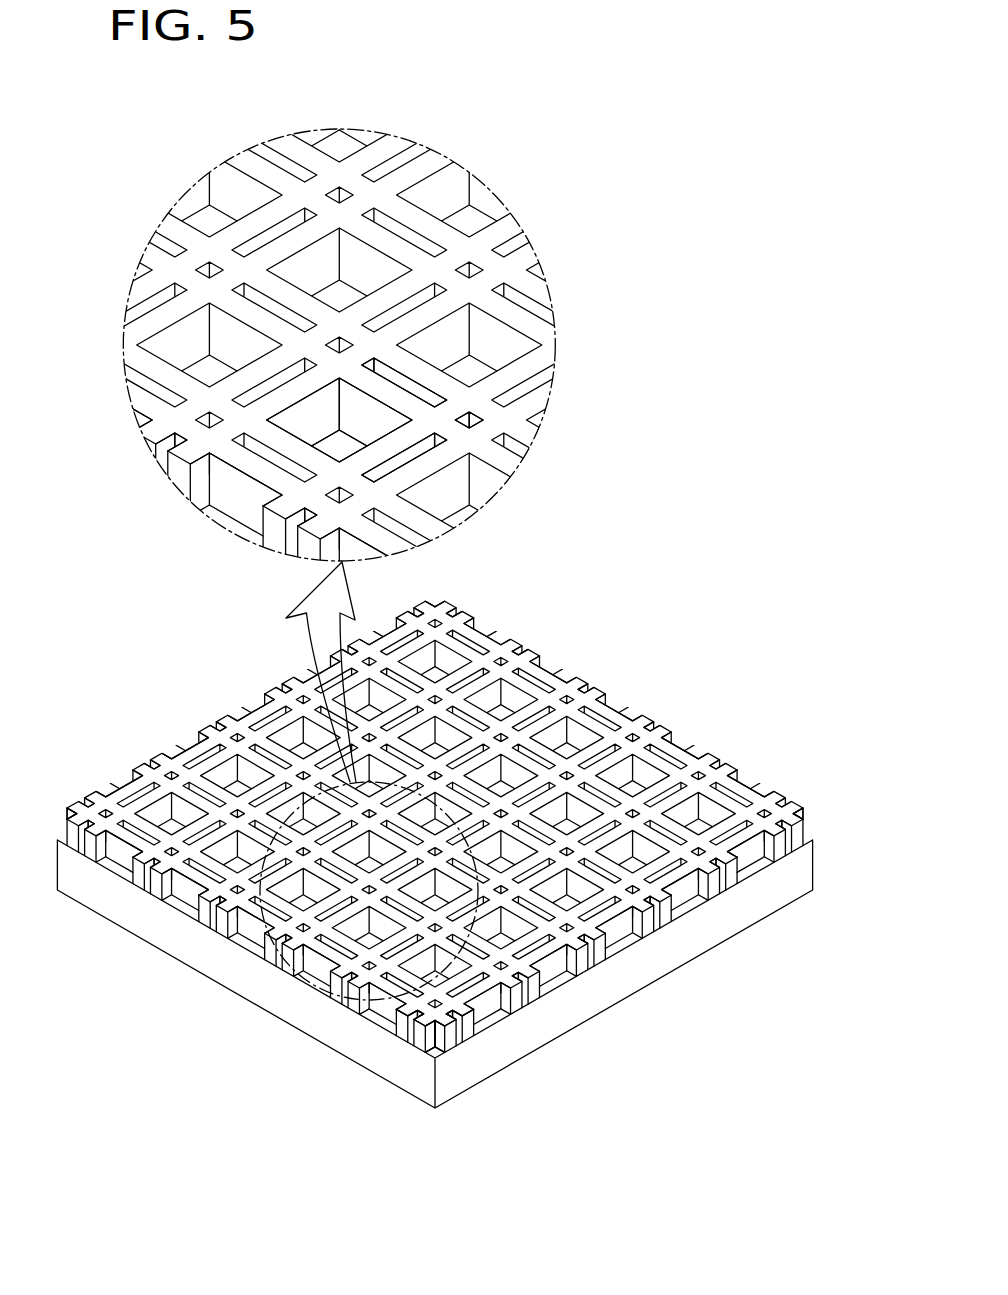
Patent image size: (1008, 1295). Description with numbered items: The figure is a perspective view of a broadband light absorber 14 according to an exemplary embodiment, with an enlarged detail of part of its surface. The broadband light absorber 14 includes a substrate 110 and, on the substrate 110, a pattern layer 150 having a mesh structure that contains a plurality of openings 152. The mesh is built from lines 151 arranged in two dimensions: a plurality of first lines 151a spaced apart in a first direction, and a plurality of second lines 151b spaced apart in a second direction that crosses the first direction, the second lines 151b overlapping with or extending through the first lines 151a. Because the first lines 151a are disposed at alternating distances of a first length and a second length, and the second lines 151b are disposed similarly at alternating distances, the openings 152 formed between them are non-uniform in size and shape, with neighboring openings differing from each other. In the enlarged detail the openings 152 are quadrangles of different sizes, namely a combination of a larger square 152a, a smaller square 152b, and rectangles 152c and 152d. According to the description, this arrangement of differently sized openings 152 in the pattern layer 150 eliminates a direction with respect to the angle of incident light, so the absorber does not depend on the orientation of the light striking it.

The broadband light absorber 14 is at (720, 640).
The substrate 110 is at (806, 870).
The pattern layer 150 is at (442, 868).
The lines 151 is at (441, 1101).
The first lines 151a is at (462, 1050).
The second lines 151b is at (416, 1050).
The openings 152 is at (483, 464).
The larger square 152a is at (366, 422).
The smaller square 152b is at (475, 422).
The rectangle 152c is at (415, 454).
The rectangle 152d is at (399, 382).